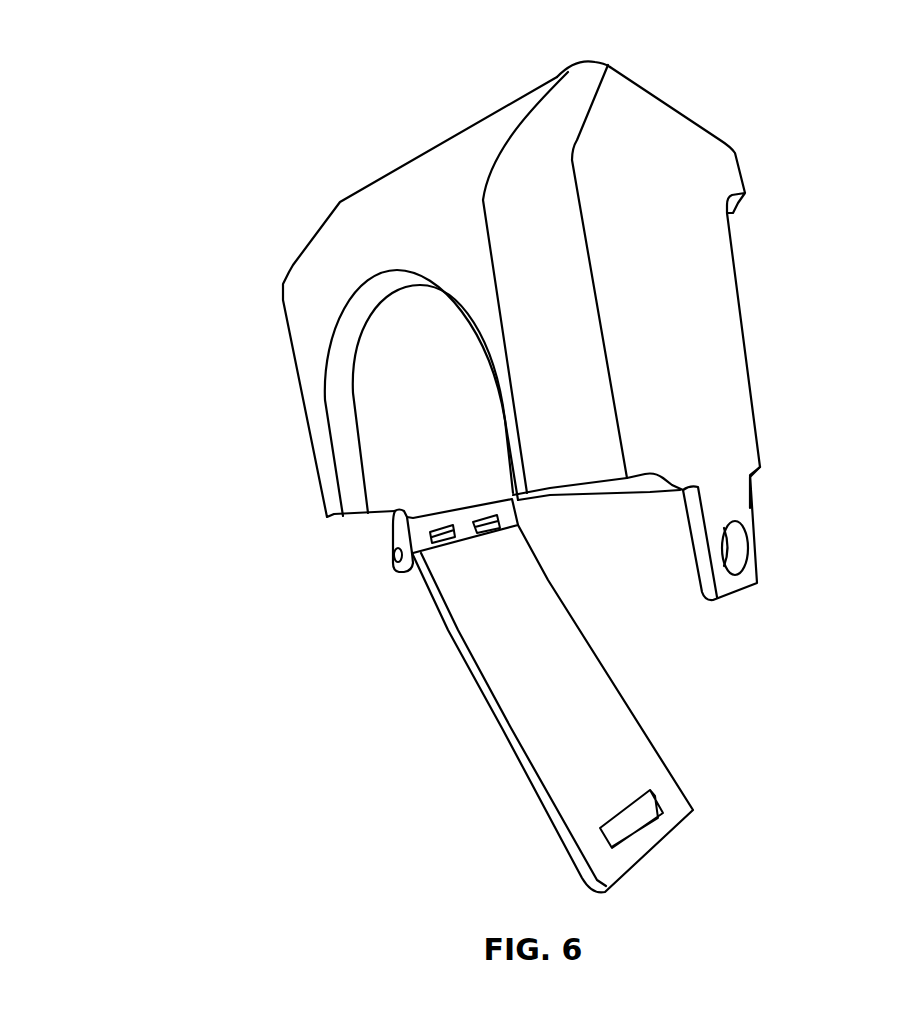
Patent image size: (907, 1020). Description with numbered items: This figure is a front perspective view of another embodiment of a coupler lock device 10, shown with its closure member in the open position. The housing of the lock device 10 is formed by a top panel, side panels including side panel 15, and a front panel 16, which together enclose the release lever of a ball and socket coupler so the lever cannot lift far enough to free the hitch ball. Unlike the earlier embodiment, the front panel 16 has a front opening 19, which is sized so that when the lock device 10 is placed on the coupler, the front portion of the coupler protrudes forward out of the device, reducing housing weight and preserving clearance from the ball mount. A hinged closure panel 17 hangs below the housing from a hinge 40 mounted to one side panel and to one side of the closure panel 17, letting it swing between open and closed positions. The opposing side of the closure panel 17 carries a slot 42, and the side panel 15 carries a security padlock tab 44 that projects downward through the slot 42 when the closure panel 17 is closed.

The coupler lock device 10 is at (725, 120).
The side panel 15 is at (670, 270).
The front panel 16 is at (313, 308).
The closure panel 17 is at (540, 722).
The front opening 19 is at (398, 320).
The hinge 40 is at (397, 553).
The slot 42 is at (618, 825).
The security padlock tab 44 is at (743, 508).